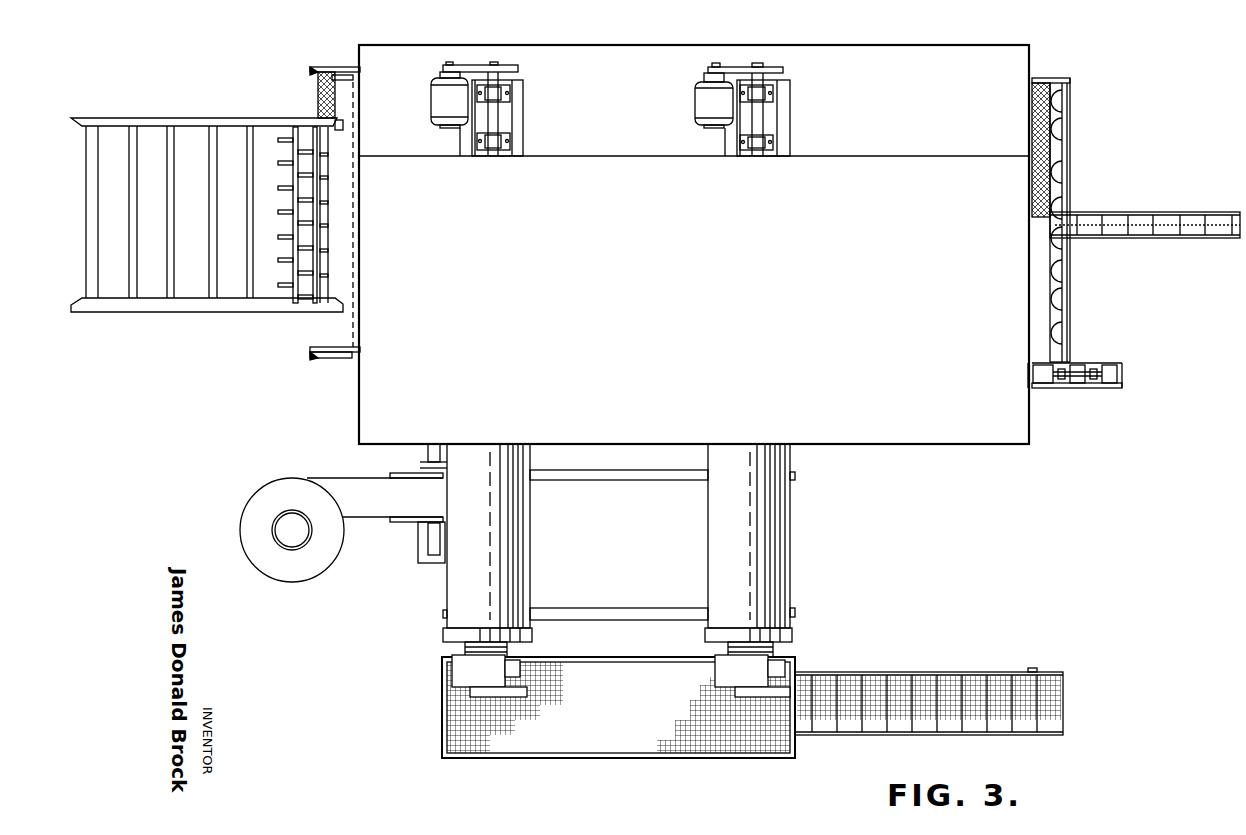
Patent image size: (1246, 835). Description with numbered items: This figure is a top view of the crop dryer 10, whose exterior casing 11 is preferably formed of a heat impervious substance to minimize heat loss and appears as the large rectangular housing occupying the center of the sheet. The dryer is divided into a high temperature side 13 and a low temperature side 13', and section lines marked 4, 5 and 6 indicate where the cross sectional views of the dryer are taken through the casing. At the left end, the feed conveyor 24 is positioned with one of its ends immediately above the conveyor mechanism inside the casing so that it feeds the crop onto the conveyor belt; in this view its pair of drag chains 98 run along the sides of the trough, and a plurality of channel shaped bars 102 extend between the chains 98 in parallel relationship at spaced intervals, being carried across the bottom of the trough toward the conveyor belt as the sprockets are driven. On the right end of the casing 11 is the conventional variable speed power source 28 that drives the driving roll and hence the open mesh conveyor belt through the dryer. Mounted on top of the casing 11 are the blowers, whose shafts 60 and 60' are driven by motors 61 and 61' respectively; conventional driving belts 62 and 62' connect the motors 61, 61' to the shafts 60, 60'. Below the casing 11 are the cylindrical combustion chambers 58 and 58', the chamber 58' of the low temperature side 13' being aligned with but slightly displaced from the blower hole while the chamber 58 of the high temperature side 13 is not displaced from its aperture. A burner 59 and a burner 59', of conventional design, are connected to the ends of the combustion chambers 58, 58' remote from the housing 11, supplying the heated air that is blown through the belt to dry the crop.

The crop dryer 10 is at (1078, 156).
The exterior casing 11 is at (710, 263).
The high temperature side 13 is at (349, 451).
The low temperature side 13' is at (972, 460).
The feed conveyor 24 is at (282, 118).
The variable speed power source 28 is at (1118, 364).
The cylindrical combustion chamber 58 is at (487, 550).
The cylindrical combustion chamber 58' is at (750, 550).
The burner 59 is at (517, 684).
The burner 59' is at (733, 676).
The shaft 60 is at (512, 114).
The shaft 60' is at (783, 114).
The motor 61 is at (431, 117).
The motor 61' is at (696, 119).
The driving belt 62 is at (479, 50).
The driving belt 62' is at (743, 52).
The drag chains 98 is at (200, 126).
The channel shaped bars 102 is at (167, 140).
The section line 4- 4 is at (347, 270).
The section line 5- 5 is at (708, 18).
The section line 6- 6 is at (383, 423).